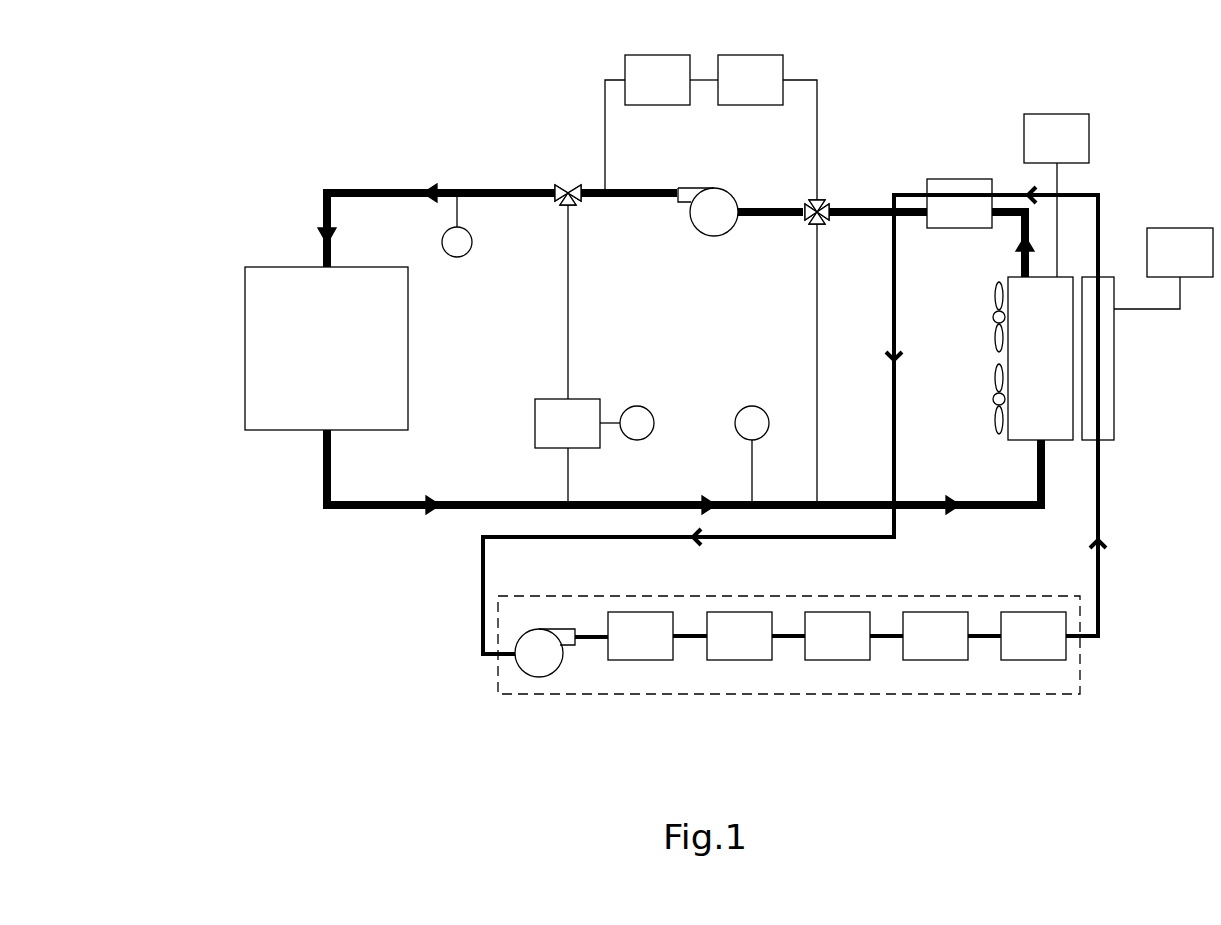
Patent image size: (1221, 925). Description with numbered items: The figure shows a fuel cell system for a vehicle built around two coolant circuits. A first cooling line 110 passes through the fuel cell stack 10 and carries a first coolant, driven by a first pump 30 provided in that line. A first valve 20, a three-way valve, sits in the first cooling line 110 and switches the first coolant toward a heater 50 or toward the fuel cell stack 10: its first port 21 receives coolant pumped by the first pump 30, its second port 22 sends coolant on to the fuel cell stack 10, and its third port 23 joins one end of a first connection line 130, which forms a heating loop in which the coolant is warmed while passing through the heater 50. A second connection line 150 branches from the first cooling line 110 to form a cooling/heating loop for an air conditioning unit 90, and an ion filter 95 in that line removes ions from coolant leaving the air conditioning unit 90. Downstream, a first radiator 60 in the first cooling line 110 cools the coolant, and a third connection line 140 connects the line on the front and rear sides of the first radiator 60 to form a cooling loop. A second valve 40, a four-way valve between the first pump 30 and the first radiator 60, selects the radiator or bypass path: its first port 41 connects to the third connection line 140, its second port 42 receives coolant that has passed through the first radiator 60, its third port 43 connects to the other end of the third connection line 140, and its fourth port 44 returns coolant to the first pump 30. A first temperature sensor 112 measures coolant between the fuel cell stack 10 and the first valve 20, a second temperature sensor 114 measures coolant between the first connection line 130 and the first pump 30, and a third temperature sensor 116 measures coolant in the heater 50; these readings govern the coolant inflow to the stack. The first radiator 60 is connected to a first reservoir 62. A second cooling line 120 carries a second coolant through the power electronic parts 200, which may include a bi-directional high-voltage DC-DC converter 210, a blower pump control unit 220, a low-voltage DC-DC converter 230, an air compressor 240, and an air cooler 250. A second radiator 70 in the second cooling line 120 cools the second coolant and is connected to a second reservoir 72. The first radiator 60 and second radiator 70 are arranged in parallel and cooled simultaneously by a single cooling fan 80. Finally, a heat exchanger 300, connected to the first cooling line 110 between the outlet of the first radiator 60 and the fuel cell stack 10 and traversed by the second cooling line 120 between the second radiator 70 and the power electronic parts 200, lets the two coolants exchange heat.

The fuel cell stack 10 is at (245, 348).
The first cooling line 110 is at (392, 189).
The first temperature sensor 112 is at (457, 257).
The first valve 20 is at (566, 185).
The first port 21 is at (582, 201).
The second port 22 is at (554, 202).
The third port 23 is at (563, 207).
The second connection line 150 is at (605, 80).
The air conditioning unit 90 is at (658, 55).
The ion filter 95 is at (752, 55).
The first pump 30 is at (713, 188).
The second valve 40 is at (832, 206).
The first port 41 is at (815, 228).
The second port 42 is at (830, 219).
The third port 43 is at (811, 200).
The fourth port 44 is at (805, 219).
The heat exchanger 300 is at (960, 179).
The first reservoir 62 is at (1057, 114).
The second reservoir 72 is at (1180, 228).
The first radiator 60 is at (1057, 440).
The second radiator 70 is at (1114, 357).
The cooling fan 80 is at (993, 320).
The heater 50 is at (535, 423).
The third temperature sensor 116 is at (637, 406).
The second temperature sensor 114 is at (752, 406).
The first connection line 130 is at (568, 478).
The third connection line 140 is at (817, 420).
The second cooling line 120 is at (483, 598).
The power electronic parts 200 is at (1080, 678).
The bi-directional high-voltage DC-DC converter 210 is at (642, 612).
The blower pump control unit 220 is at (740, 612).
The low-voltage DC-DC converter 230 is at (838, 612).
The air compressor 240 is at (936, 612).
The air cooler 250 is at (1034, 612).